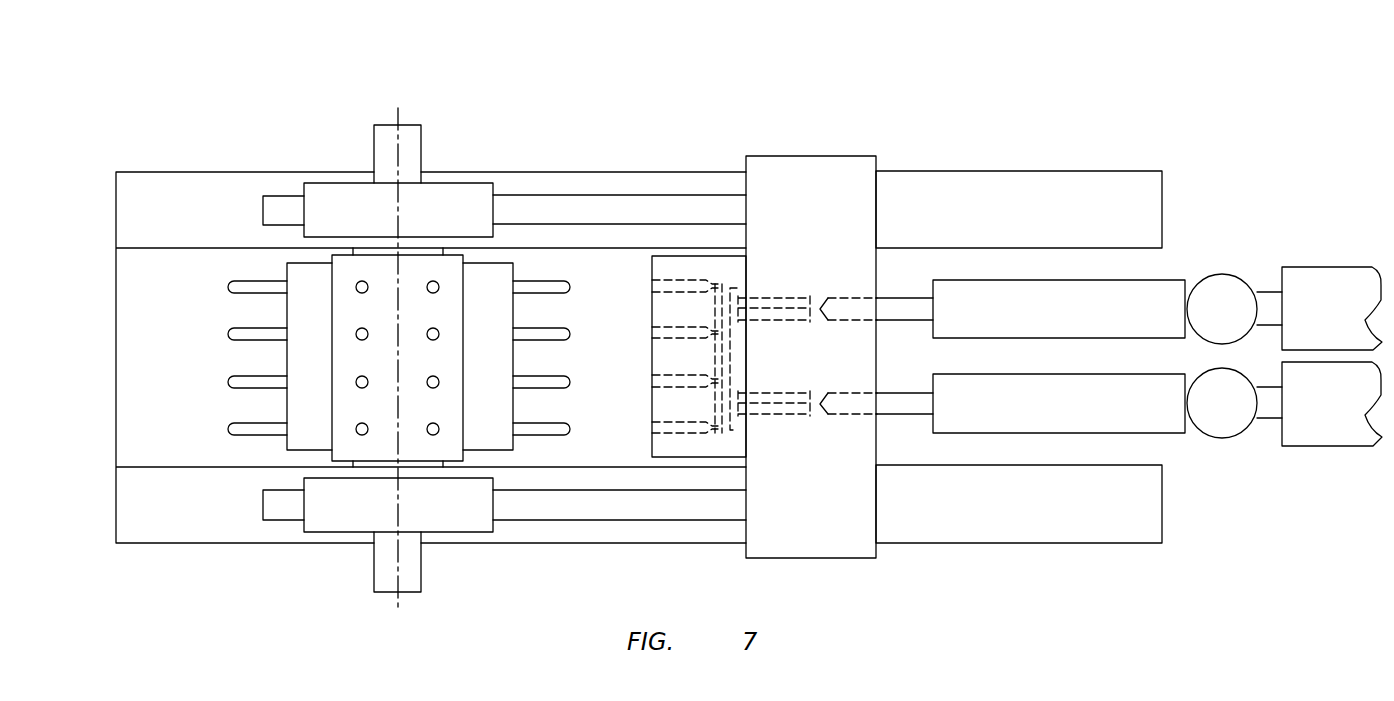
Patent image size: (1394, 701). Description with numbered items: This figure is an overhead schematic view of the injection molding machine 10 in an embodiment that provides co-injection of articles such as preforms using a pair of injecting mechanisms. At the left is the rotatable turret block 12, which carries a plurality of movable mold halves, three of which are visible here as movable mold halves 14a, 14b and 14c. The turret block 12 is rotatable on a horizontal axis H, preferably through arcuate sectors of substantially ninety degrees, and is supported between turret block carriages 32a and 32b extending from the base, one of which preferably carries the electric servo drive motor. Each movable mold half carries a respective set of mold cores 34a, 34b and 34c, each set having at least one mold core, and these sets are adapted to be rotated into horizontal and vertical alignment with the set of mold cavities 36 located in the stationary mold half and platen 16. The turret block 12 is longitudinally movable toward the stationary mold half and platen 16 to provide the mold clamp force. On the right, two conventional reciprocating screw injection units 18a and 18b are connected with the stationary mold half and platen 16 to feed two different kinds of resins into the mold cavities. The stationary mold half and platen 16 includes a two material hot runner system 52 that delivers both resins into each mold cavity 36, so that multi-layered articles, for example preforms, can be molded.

The injection molding machine 10 is at (672, 125).
The rotatable turret block 12 is at (320, 137).
The horizontal axis H is at (398, 138).
The movable mold half 14a is at (495, 312).
The movable mold half 14b is at (347, 442).
The movable mold half 14c is at (303, 402).
The stationary mold half and platen 16 is at (817, 558).
The reciprocating screw injection unit 18a is at (1163, 285).
The reciprocating screw injection unit 18b is at (1163, 423).
The turret block carriage 32a is at (339, 510).
The turret block carriage 32b is at (324, 193).
The set of mold cores 34a is at (563, 335).
The set of mold cores 34b is at (440, 432).
The set of mold cores 34c is at (233, 283).
The set of mold cavities 36 is at (677, 433).
The two material hot runner system 52 is at (740, 265).